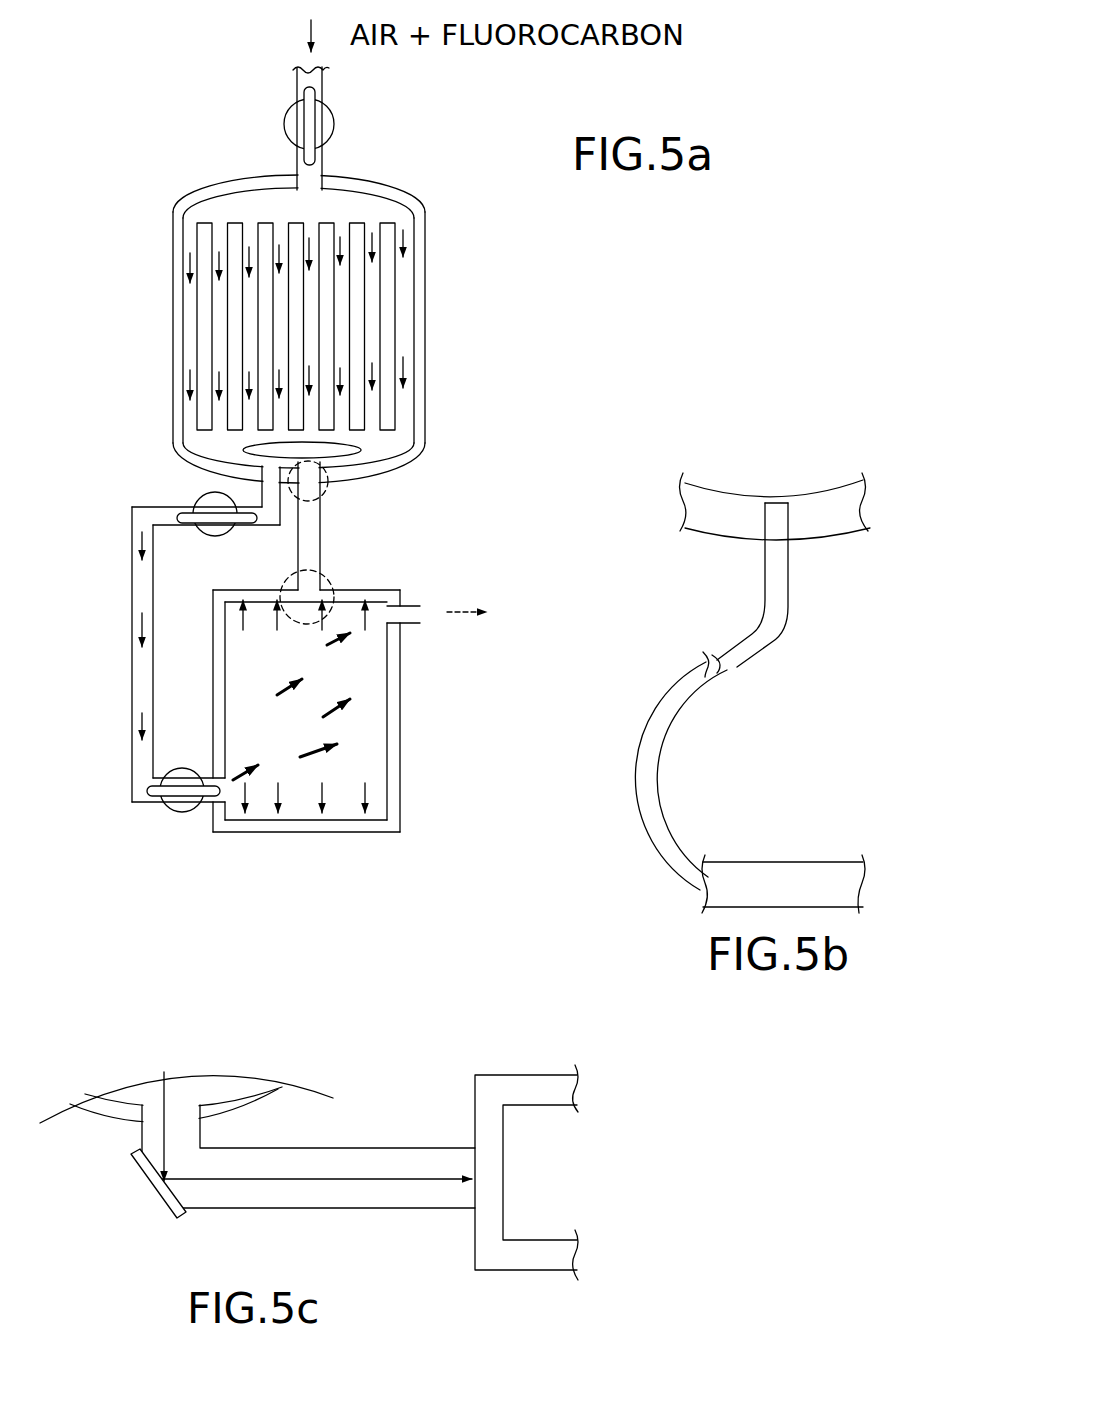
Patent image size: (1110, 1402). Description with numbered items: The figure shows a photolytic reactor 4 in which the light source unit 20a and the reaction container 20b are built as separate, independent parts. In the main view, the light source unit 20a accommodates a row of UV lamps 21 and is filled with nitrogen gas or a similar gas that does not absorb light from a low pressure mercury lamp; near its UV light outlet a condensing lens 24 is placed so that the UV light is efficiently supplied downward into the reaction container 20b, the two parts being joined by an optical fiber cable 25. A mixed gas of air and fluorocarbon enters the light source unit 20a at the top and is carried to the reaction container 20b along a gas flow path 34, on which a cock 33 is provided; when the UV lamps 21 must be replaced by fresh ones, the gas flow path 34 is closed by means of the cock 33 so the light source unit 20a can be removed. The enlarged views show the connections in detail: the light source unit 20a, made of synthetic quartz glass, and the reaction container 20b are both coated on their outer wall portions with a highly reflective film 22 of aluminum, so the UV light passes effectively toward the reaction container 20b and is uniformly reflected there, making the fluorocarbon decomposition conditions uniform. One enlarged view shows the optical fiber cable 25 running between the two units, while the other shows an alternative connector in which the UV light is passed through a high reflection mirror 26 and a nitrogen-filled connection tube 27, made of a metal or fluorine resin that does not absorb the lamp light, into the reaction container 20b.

In FIG. 5A, the photolytic reactor 4 is at (492, 224).
In FIG. 5A, the light source unit 20a is at (423, 347).
In FIG. 5B, the light source unit 20a is at (718, 480).
In FIG. 5C, the light source unit 20a is at (238, 1058).
In FIG. 5A, the reaction container 20b is at (386, 588).
In FIG. 5B, the reaction container 20b is at (753, 836).
In FIG. 5C, the reaction container 20b is at (572, 1168).
In FIG. 5A, the UV lamps 21 is at (397, 272).
In FIG. 5B, the highly reflective film 22 is at (833, 538).
In FIG. 5C, the highly reflective film 22 is at (271, 1097).
In FIG. 5A, the condensing lens 24 is at (362, 454).
In FIG. 5A, the optical fiber cable 25 is at (321, 530).
In FIG. 5B, the optical fiber cable 25 is at (768, 645).
In FIG. 5C, the high reflection mirror 26 is at (155, 1188).
In FIG. 5C, the connection tube 27 is at (335, 1210).
In FIG. 5A, the cock 33 is at (216, 538).
In FIG. 5A, the gas flow path 34 is at (132, 657).